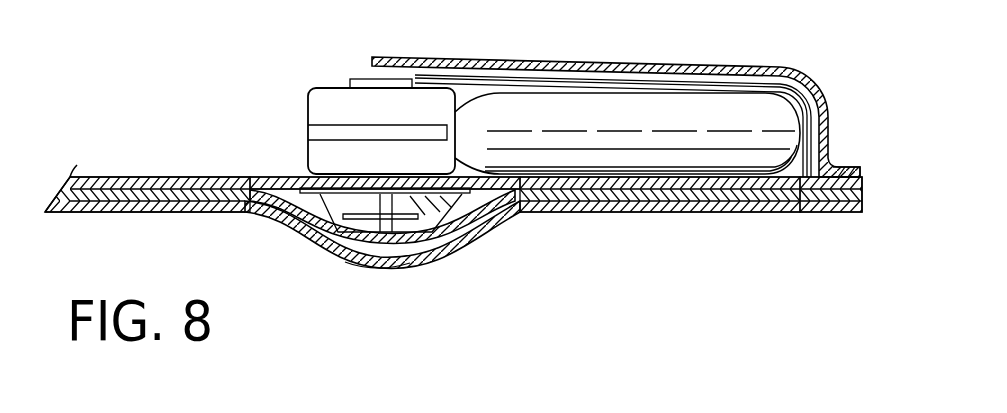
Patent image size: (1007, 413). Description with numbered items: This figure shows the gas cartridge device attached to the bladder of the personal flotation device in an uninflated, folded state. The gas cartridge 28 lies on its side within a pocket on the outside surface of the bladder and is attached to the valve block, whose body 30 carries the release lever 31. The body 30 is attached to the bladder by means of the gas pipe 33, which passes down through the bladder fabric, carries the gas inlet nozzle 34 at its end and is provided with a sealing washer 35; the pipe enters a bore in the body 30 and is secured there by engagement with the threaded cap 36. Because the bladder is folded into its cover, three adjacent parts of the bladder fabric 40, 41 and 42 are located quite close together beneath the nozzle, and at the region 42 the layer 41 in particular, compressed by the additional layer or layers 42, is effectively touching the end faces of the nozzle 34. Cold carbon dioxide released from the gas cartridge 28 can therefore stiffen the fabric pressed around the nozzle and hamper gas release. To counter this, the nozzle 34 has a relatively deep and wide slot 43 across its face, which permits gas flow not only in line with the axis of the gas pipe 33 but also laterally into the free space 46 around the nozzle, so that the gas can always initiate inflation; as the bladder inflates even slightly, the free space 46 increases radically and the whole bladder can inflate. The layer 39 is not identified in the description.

The gas cartridge 28 is at (745, 106).
The body 30 is at (322, 100).
The release lever 31 is at (333, 133).
The gas pipe 33 is at (470, 217).
The gas inlet nozzle 34 is at (412, 232).
The sealing washer 35 is at (273, 220).
The threaded cap 36 is at (385, 80).
The cover layer 39 is at (604, 67).
The bladder fabric part 40 is at (850, 168).
The bladder fabric layer 41 is at (818, 195).
The additional layer or layers 42 is at (372, 272).
The slot 43 is at (682, 205).
The free space 46 is at (310, 248).